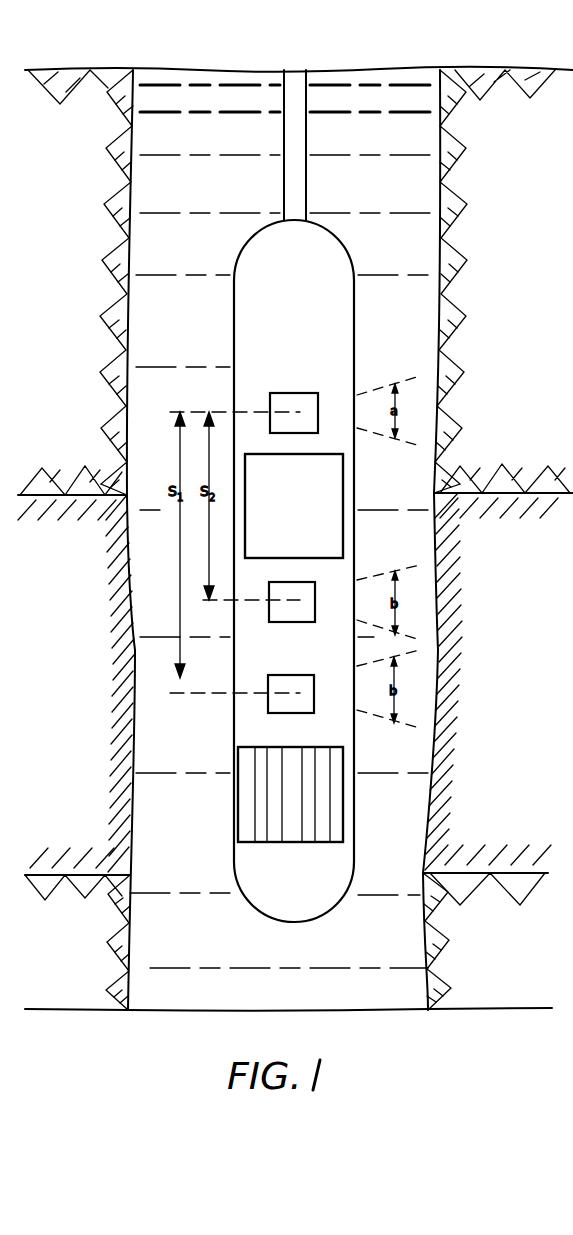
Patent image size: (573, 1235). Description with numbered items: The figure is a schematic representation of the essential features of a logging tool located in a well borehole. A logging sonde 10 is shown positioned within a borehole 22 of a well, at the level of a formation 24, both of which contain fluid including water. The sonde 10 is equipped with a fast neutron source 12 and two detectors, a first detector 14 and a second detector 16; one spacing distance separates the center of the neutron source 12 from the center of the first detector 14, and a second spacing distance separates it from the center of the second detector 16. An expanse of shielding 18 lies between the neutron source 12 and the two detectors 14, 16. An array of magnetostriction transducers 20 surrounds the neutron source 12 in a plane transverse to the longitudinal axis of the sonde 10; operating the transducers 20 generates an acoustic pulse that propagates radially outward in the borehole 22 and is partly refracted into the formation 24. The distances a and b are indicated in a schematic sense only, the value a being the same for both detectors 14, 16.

The logging sonde 10 is at (354, 276).
The fast neutron source 12 is at (318, 400).
The first detector 14 is at (308, 593).
The second detector 16 is at (310, 683).
The shielding 18 is at (330, 498).
The array of magnetostriction transducers 20 is at (245, 775).
The borehole 22 is at (149, 70).
The formation 24 is at (533, 684).